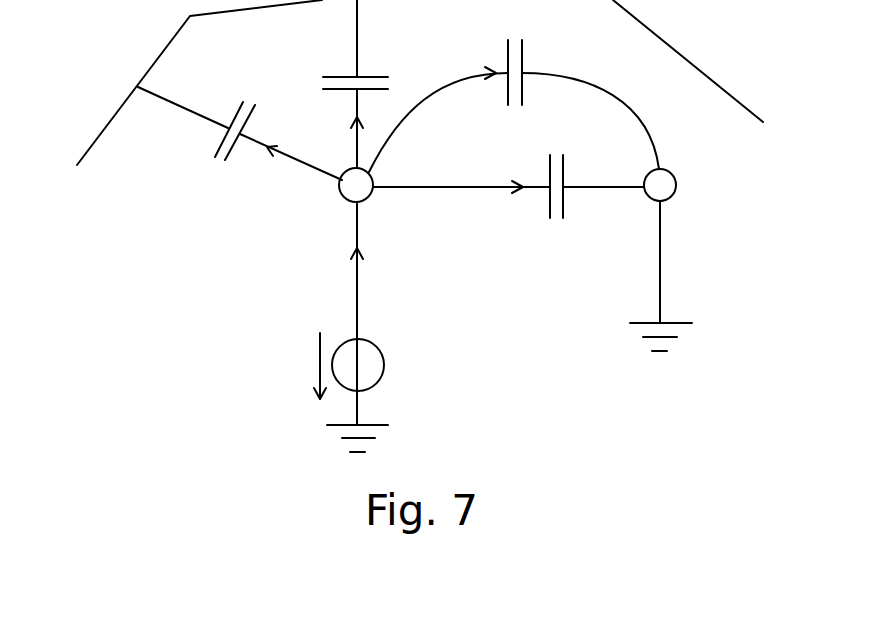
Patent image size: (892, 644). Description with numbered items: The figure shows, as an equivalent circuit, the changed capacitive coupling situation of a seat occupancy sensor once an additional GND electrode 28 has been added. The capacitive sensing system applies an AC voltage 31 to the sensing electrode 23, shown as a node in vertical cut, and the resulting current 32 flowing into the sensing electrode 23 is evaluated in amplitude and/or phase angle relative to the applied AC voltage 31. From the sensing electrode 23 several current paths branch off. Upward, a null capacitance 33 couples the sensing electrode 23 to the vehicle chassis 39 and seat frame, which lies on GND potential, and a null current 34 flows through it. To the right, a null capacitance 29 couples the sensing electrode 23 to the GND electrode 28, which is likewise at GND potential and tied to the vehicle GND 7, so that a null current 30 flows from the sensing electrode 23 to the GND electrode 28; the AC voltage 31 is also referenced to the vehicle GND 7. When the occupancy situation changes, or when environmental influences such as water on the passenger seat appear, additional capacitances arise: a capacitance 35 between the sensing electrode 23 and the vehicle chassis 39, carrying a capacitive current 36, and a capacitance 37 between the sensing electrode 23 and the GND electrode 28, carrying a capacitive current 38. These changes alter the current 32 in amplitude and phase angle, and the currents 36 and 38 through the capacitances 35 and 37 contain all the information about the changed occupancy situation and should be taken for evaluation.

The vehicle GND 7 is at (510, 335).
The sensing electrode 23 is at (368, 196).
The GND electrode 28 is at (679, 185).
The null capacitance between sensing electrode and GND electrode 29 is at (556, 202).
The null current 30 is at (508, 172).
The AC voltage 31 is at (332, 366).
The current flowing into the sensing electrode 32 is at (340, 313).
The null capacitance between sensing electrode and vehicle chassis/seat frame 33 is at (338, 84).
The null current 34 is at (340, 127).
The capacitance between sensing electrode and vehicle chassis 35 is at (240, 135).
The capacitive current 36 is at (269, 164).
The capacitance between sensing electrode and GND electrode 37 is at (531, 63).
The capacitive current 38 is at (514, 109).
The vehicle chassis 39 is at (420, 82).